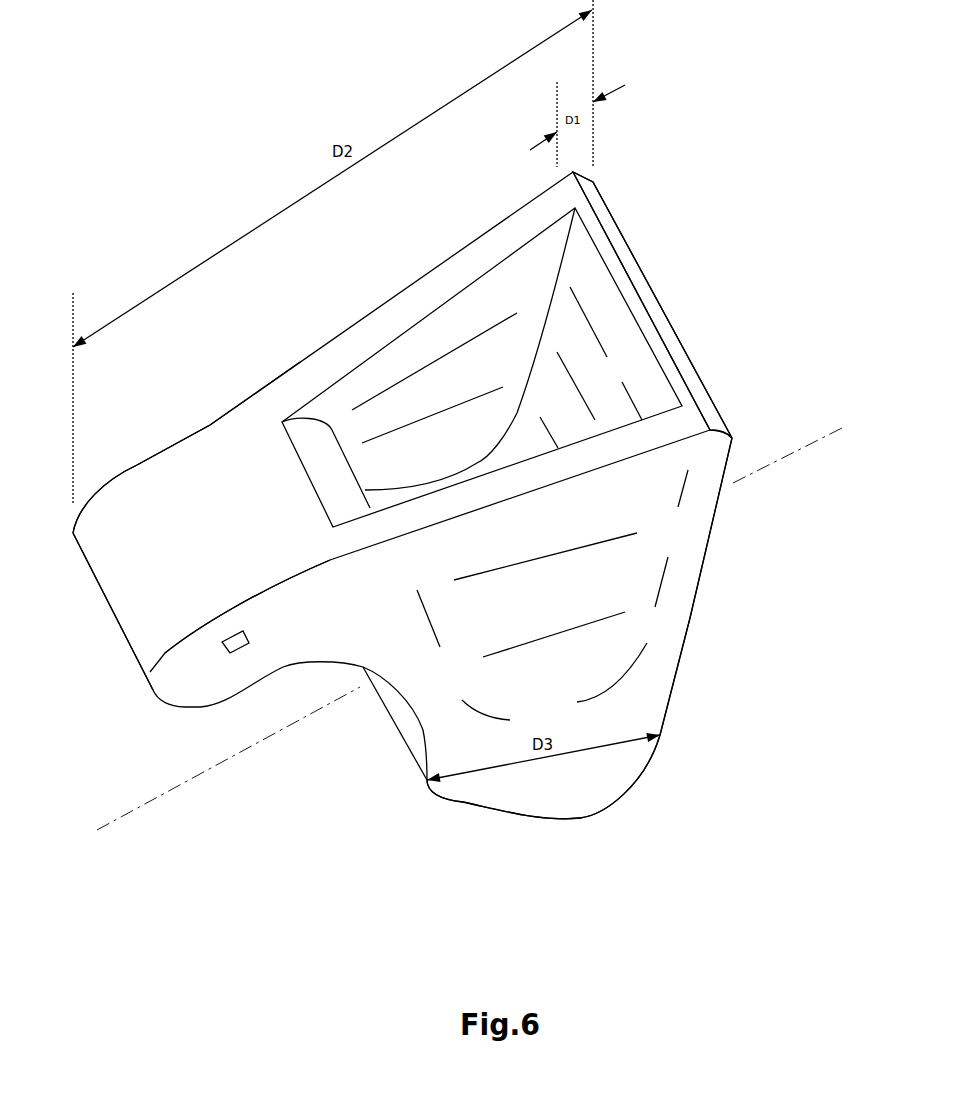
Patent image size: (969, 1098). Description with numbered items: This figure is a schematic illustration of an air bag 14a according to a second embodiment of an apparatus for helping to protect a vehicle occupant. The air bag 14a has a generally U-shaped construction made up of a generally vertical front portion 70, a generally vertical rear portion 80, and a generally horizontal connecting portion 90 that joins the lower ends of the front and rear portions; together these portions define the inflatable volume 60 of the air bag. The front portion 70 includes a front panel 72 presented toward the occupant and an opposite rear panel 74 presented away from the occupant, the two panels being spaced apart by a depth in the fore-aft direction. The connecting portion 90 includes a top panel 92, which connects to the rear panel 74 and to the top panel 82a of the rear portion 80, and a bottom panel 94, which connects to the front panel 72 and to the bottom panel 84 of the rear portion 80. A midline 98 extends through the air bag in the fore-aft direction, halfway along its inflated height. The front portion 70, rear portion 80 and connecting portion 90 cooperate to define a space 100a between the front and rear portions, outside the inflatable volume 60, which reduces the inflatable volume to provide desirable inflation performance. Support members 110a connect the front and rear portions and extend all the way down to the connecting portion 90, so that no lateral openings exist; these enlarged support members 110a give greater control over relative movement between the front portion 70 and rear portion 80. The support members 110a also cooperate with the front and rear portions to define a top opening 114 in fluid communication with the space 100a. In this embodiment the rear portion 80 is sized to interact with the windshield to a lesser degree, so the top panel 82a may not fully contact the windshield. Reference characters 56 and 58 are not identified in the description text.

The air bag 14a is at (332, 290).
The rounded corner edge 56 is at (108, 468).
The top end 58 is at (530, 188).
The inflatable volume 60 is at (255, 447).
The front portion 70 is at (655, 285).
The front panel 72 is at (690, 606).
The rear panel 74 is at (638, 383).
The rear portion 80 is at (185, 437).
The top panel 82a is at (143, 603).
The bottom panel 84 is at (400, 705).
The connecting portion 90 is at (607, 807).
The top panel 92 is at (408, 492).
The bottom panel 94 is at (503, 810).
The midline 98 is at (773, 448).
The space 100a is at (477, 330).
The support members 110a is at (417, 353).
The top opening 114 is at (590, 290).